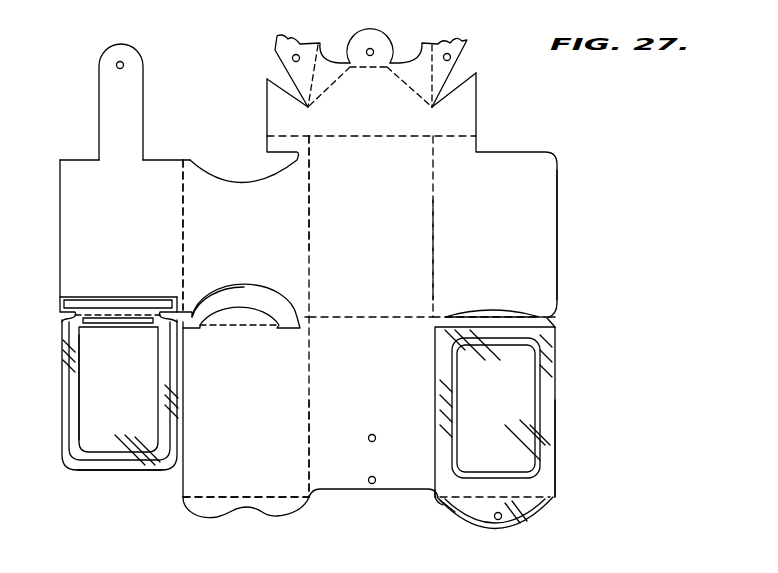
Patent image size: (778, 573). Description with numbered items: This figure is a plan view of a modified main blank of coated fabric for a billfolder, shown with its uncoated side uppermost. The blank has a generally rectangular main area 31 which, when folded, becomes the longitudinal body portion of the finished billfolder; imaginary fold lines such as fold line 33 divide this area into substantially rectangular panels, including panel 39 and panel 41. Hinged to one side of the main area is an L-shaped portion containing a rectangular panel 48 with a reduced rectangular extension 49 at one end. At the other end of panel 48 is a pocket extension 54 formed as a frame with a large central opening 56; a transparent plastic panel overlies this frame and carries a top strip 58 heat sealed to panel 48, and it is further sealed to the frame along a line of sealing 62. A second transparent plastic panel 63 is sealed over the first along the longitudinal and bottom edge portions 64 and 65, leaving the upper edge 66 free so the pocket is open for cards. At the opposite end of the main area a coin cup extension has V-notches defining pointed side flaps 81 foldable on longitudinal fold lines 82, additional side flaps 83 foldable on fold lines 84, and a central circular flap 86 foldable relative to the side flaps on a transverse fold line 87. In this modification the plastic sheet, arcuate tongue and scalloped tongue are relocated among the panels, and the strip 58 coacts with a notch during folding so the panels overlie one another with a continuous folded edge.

The main area 31 is at (557, 188).
The fold line 33 is at (375, 315).
The panel 39 is at (340, 316).
The panel 41 is at (373, 438).
The rectangular panel 48 is at (121, 235).
The rectangular extension 49 is at (143, 106).
The pocket extension 54 is at (62, 416).
The central opening 56 is at (81, 400).
The strip extension 58 is at (307, 317).
The line of sealing 62 is at (62, 318).
The pocket forming panel 63 is at (118, 389).
The longitudinal edge portion 64 is at (170, 357).
The bottom edge portion 65 is at (107, 470).
The upper edge 66 is at (118, 323).
The side flap 81 is at (270, 104).
The fold line 82 is at (310, 110).
The side flap 83 is at (277, 38).
The fold line 84 is at (318, 45).
The central flap 86 is at (378, 30).
The fold line 87 is at (368, 68).